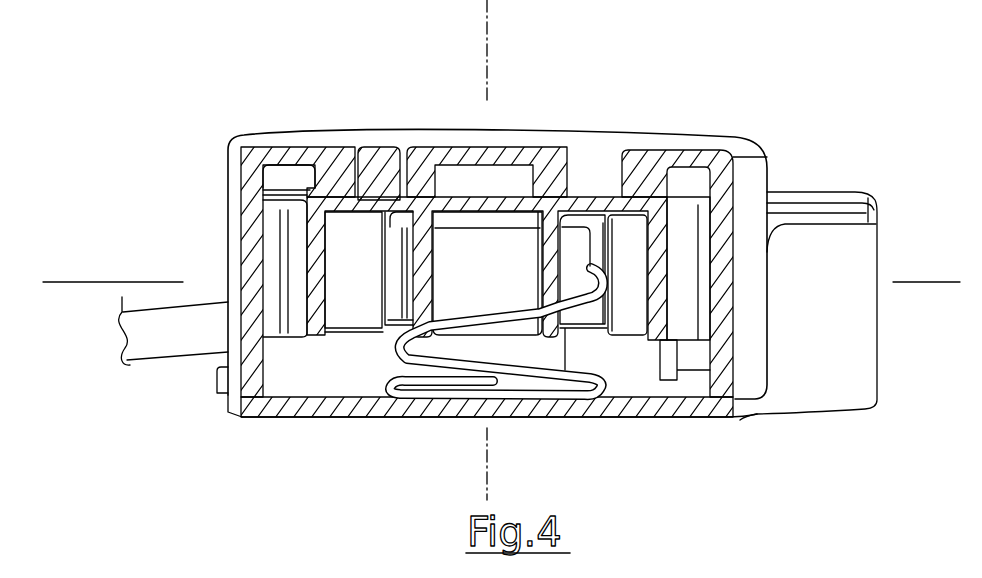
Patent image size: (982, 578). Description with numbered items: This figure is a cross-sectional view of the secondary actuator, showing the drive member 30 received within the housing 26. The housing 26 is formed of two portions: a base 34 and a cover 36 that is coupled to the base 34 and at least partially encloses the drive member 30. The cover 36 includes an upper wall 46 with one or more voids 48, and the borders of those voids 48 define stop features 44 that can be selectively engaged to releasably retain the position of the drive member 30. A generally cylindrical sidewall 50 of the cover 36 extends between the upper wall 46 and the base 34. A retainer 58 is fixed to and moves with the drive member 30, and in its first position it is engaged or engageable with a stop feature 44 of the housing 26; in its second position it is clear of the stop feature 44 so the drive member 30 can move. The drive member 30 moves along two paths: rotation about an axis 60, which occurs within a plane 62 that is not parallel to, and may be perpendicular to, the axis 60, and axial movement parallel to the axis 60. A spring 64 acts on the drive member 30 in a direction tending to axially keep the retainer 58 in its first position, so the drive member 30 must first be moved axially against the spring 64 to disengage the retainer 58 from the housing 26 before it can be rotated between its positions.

The housing 26 is at (770, 116).
The drive member 30 is at (685, 242).
The base 34 is at (283, 405).
The cover 36 is at (260, 129).
The stop feature 44 is at (620, 171).
The upper wall 46 is at (329, 140).
The void 48 is at (595, 163).
The sidewall 50 is at (238, 192).
The retainer 58 is at (380, 158).
The axis 60 is at (487, 46).
The plane 62 is at (73, 283).
The spring 64 is at (592, 387).